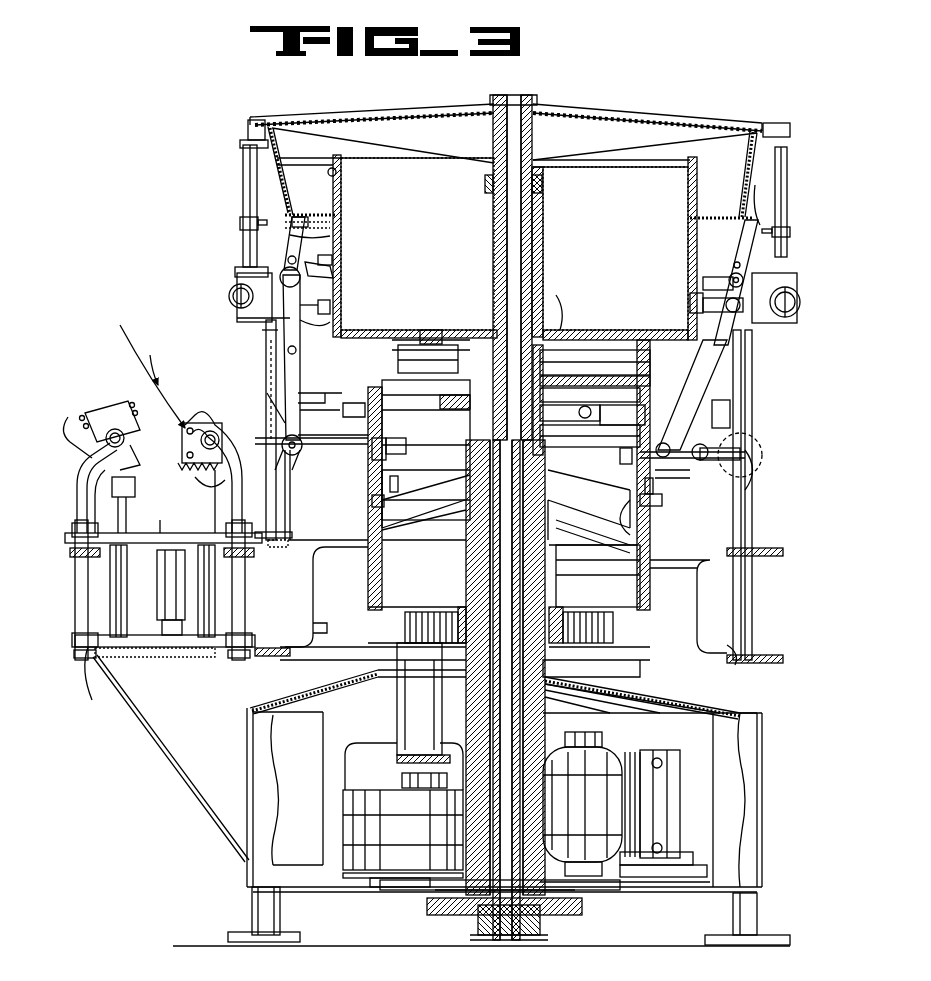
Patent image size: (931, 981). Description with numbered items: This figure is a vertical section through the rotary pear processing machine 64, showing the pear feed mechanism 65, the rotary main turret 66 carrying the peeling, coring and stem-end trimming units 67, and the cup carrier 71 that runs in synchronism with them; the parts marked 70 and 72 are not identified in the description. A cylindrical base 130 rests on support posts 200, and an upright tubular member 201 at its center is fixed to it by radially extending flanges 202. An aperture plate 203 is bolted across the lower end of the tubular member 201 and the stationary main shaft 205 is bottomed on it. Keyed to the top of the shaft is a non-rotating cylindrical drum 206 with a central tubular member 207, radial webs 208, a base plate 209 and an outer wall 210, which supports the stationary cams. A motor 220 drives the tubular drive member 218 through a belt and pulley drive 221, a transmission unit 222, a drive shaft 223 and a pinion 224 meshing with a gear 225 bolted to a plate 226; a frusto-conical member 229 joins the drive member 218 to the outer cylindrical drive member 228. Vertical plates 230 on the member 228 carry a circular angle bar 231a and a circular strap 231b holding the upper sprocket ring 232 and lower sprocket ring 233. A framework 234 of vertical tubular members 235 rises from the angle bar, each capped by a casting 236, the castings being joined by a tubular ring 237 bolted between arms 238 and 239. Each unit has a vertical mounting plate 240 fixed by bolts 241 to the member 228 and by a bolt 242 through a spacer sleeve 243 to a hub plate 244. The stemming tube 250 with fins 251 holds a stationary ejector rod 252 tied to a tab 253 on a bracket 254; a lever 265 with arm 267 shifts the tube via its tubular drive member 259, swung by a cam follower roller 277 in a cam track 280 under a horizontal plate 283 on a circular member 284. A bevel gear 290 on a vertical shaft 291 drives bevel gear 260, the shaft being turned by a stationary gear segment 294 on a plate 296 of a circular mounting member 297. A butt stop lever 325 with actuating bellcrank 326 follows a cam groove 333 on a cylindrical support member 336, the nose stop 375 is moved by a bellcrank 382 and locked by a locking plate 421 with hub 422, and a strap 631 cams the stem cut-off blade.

The rotary pear processing machine 64 is at (183, 133).
The pear feed mechanism 65 is at (140, 365).
The rotary main turret 66 is at (237, 212).
The pear processing unit 67 is at (760, 514).
The cam follower bracket 70 is at (128, 413).
The cup carrier 71 is at (81, 676).
The pipe assembly 72 is at (232, 493).
The cylindrical base 130 is at (245, 822).
The support posts 200 is at (283, 925).
The upright tubular member 201 is at (545, 733).
The radially extending flanges 202 is at (320, 790).
The aperture plate 203 is at (528, 910).
The main shaft 205 is at (540, 226).
The cylindrical drum 206 is at (350, 218).
The central tubular member 207 is at (490, 186).
The radial webs 208 is at (427, 243).
The base plate 209 is at (576, 305).
The outer wall 210 is at (332, 297).
The tubular drive member 218 is at (558, 566).
The motor 220 is at (590, 810).
The belt and pulley drive 221 is at (385, 892).
The transmission unit 222 is at (420, 810).
The drive shaft 223 is at (415, 768).
The pinion 224 is at (372, 649).
The gear 225 is at (612, 612).
The plate 226 is at (425, 610).
The outer cylindrical drive member 228 is at (380, 569).
The frusto-conical member 229 is at (562, 530).
The vertical plates 230 is at (382, 590).
The circular angle bar 231a is at (285, 534).
The circular strap 231b is at (527, 640).
The upper sprocket ring 232 is at (315, 573).
The lower sprocket ring 233 is at (265, 665).
The framework 234 is at (260, 335).
The vertical tubular members 235 is at (264, 350).
The casting 236 is at (235, 277).
The tubular ring 237 is at (228, 297).
The arm 238 is at (245, 268).
The arm 239 is at (235, 318).
The vertical mounting plate 240 is at (368, 512).
The bolts 241 is at (372, 503).
The bolt 242 is at (432, 438).
The spacer sleeve 243 is at (435, 390).
The hub plate 244 is at (575, 382).
The stemming tube 250 is at (300, 440).
The fins 251 is at (738, 458).
The stationary ejector rod 252 is at (440, 435).
The tab 253 is at (535, 438).
The bracket 254 is at (589, 505).
The tubular drive member 259 is at (368, 452).
The bevel gear 260 is at (385, 460).
The lever 265 is at (340, 272).
The lever arm 267 is at (298, 396).
The cam follower roller 277 is at (335, 238).
The cam track 280 is at (335, 222).
The horizontal plate 283 is at (318, 212).
The circular member 284 is at (340, 171).
The bevel gear 290 is at (382, 478).
The vertical shaft 291 is at (652, 478).
The stationary gear segment 294 is at (640, 528).
The plate 296 is at (455, 535).
The stationary circular mounting member 297 is at (560, 540).
The butt stop lever 325 is at (282, 395).
The actuating bellcrank 326 is at (265, 364).
The cam groove 333 is at (334, 256).
The cylindrical support member 336 is at (265, 231).
The nose stop 375 is at (735, 420).
The bellcrank 382 is at (750, 380).
The locking plate 421 is at (590, 390).
The hub 422 is at (592, 417).
The strap 631 is at (341, 314).